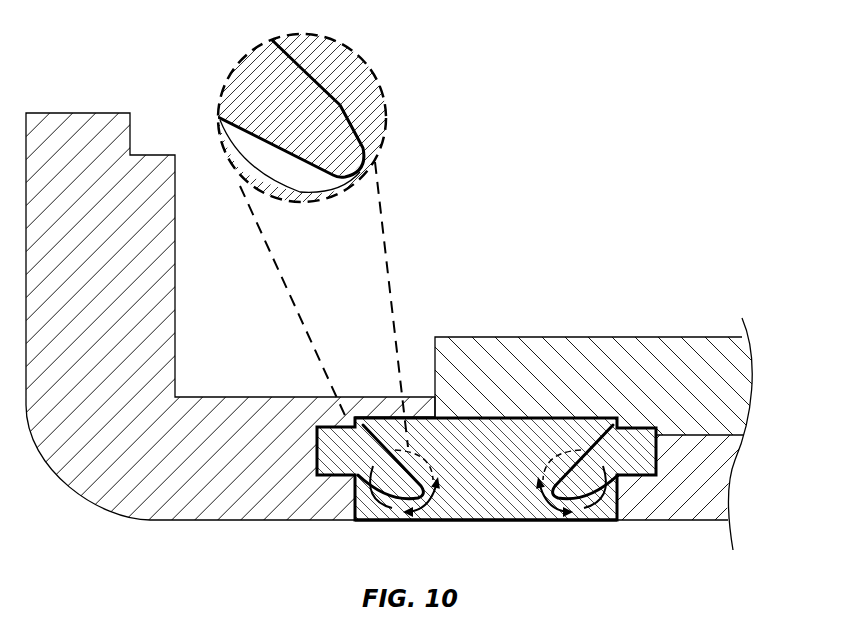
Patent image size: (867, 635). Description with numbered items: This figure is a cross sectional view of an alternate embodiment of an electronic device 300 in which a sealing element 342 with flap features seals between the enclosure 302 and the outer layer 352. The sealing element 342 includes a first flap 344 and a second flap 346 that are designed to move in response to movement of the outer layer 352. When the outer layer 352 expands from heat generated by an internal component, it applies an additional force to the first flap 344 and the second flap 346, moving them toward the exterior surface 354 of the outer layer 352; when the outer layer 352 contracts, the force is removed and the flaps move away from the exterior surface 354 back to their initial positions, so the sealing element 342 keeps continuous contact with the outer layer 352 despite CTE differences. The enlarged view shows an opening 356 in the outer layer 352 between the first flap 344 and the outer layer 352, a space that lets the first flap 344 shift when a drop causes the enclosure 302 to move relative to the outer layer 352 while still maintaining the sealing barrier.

The electronic device 300 is at (739, 185).
The enclosure 302 is at (120, 289).
The sealing element 342 is at (519, 255).
The first flap 344 is at (408, 460).
The second flap 346 is at (630, 425).
The outer layer 352 is at (498, 480).
The exterior surface 354 is at (540, 520).
The opening 356 is at (203, 111).